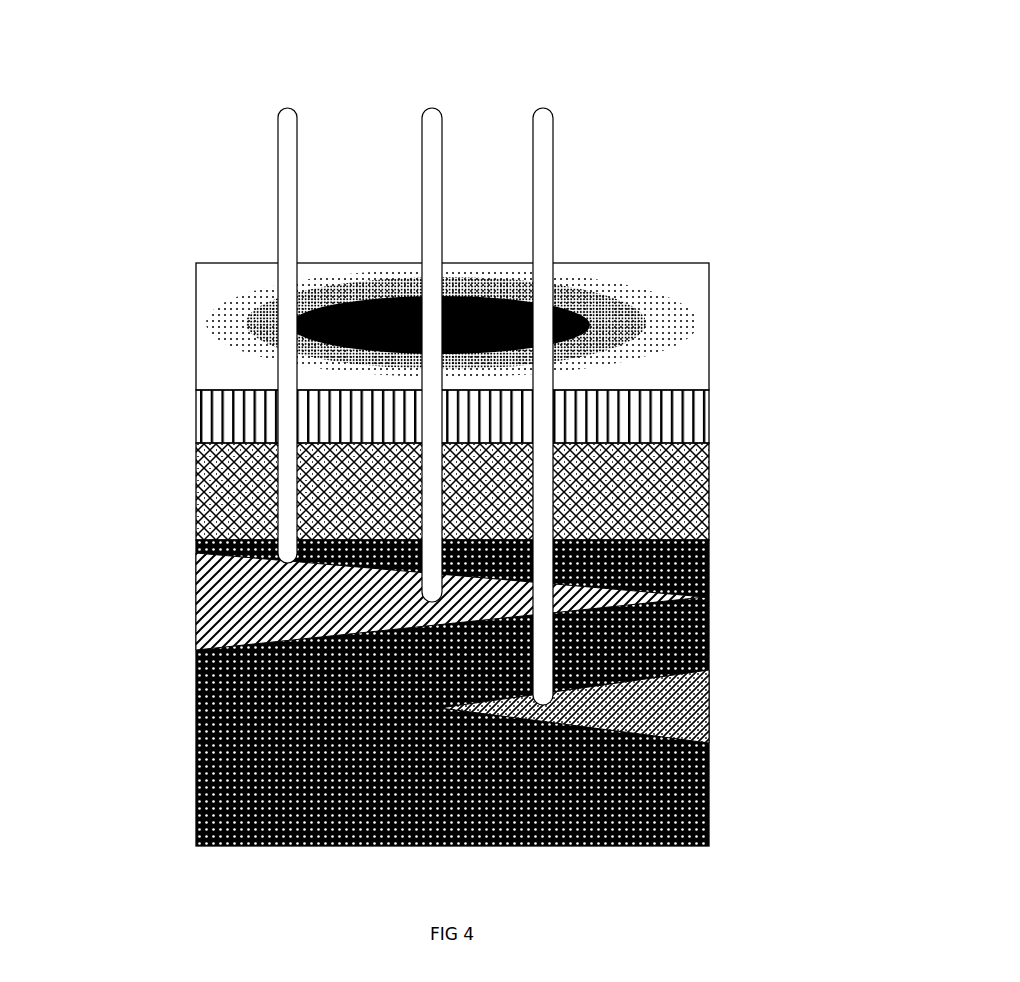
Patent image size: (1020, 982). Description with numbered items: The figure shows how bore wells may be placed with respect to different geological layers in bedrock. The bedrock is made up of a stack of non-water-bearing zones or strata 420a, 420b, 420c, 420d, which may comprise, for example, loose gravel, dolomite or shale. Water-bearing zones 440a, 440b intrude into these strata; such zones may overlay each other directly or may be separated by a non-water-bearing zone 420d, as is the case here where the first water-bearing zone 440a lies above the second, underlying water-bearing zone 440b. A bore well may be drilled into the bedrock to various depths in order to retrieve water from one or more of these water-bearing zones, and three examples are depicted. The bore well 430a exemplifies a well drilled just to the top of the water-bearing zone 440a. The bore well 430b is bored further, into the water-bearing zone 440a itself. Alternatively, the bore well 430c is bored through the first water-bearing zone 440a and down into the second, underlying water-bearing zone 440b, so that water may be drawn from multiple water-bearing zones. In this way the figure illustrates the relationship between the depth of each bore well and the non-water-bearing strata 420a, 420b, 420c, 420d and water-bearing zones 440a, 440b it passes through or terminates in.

The non-water-bearing zone 420a is at (730, 325).
The non-water-bearing zone 420b is at (735, 414).
The non-water-bearing zone 420c is at (722, 480).
The non-water-bearing zone 420d is at (720, 780).
The bore well 430a is at (290, 97).
The bore well 430b is at (431, 97).
The bore well 430c is at (544, 97).
The water-bearing zone 440a is at (187, 593).
The water-bearing zone 440b is at (710, 705).